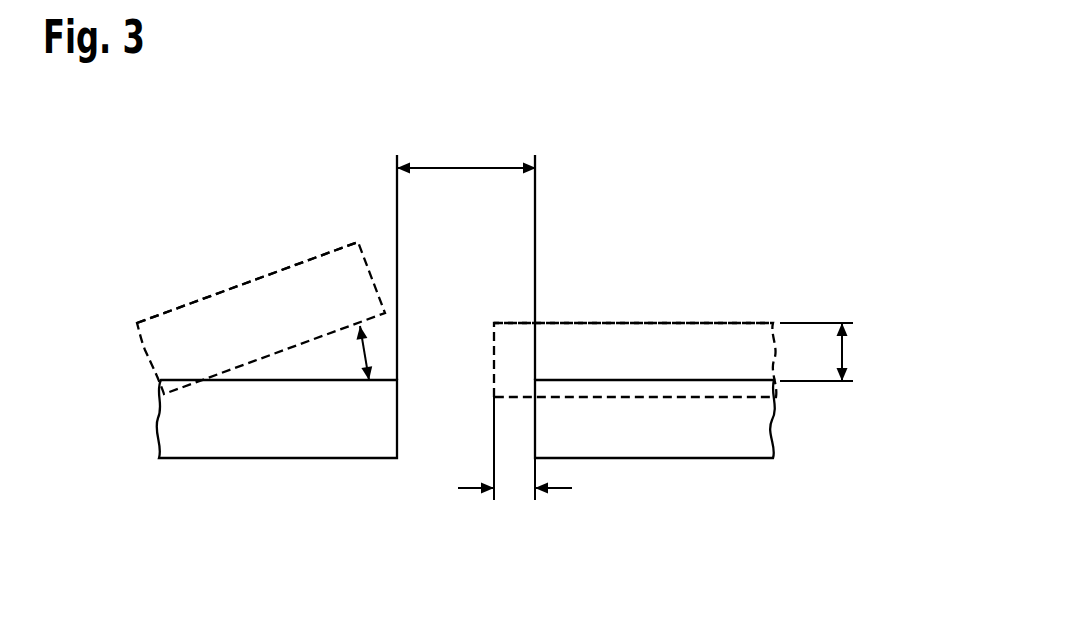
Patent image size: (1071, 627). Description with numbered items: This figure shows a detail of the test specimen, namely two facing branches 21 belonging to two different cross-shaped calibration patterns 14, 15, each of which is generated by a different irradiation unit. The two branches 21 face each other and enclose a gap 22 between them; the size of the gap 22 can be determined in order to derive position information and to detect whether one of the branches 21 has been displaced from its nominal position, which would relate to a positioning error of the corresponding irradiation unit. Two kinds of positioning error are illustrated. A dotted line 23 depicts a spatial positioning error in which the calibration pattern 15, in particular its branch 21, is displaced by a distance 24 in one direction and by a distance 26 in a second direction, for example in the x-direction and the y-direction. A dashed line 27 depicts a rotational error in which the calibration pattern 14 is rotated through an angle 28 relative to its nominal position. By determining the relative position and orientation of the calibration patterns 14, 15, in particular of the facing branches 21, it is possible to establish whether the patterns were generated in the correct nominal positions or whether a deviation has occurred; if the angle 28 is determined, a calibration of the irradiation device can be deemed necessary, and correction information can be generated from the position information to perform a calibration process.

The calibration pattern 14 is at (203, 230).
The calibration pattern 15 is at (672, 240).
The branch 21 is at (207, 458).
The gap 22 is at (465, 168).
The dotted line 23 is at (722, 323).
The distance 24 is at (848, 352).
The distance 26 is at (515, 490).
The dashed line 27 is at (184, 306).
The angle 28 is at (368, 352).